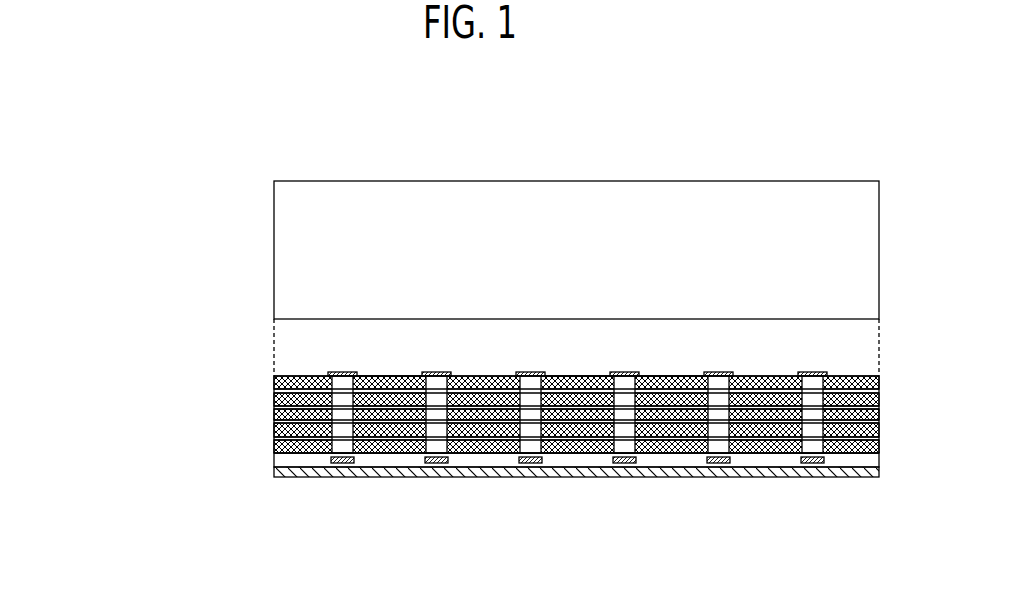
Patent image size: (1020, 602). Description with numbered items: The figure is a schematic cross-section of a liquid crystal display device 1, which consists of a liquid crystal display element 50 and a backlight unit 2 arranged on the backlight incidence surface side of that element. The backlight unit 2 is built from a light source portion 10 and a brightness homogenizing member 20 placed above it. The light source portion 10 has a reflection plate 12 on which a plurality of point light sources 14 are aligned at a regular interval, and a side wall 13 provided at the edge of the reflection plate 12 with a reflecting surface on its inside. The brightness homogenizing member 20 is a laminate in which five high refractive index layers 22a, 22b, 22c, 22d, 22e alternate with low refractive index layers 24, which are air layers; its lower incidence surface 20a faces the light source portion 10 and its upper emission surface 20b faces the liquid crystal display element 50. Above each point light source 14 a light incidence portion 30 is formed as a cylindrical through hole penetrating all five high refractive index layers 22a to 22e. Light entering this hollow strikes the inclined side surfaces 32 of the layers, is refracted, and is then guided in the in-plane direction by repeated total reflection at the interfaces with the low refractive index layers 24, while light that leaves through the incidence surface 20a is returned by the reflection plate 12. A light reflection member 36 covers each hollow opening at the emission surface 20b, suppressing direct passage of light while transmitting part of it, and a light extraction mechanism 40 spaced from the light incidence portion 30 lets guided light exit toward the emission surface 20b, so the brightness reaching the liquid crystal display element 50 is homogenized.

The liquid crystal display device 1 is at (235, 177).
The backlight unit 2 is at (44, 248).
The light source portion 10 is at (94, 523).
The reflection plate 12 is at (274, 472).
The side wall 13 is at (274, 460).
The point light source 14 is at (340, 466).
The brightness homogenizing member 20 is at (94, 248).
The incidence surface 20a is at (757, 456).
The emission surface 20b is at (768, 373).
The high refractive index layer 22a is at (274, 446).
The high refractive index layer 22b is at (274, 430).
The high refractive index layer 22c is at (274, 415).
The high refractive index layer 22d is at (274, 400).
The high refractive index layer 22e is at (274, 383).
The low refractive index layer 24 is at (274, 391).
The light incidence portion 30 is at (582, 376).
The side surface 32 is at (535, 452).
The light reflection member 36 is at (334, 372).
The light extraction mechanism 40 is at (374, 375).
The liquid crystal display element 50 is at (879, 256).